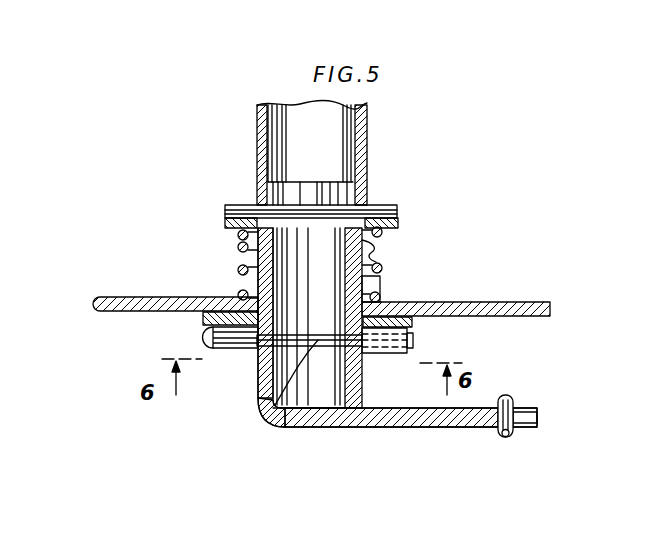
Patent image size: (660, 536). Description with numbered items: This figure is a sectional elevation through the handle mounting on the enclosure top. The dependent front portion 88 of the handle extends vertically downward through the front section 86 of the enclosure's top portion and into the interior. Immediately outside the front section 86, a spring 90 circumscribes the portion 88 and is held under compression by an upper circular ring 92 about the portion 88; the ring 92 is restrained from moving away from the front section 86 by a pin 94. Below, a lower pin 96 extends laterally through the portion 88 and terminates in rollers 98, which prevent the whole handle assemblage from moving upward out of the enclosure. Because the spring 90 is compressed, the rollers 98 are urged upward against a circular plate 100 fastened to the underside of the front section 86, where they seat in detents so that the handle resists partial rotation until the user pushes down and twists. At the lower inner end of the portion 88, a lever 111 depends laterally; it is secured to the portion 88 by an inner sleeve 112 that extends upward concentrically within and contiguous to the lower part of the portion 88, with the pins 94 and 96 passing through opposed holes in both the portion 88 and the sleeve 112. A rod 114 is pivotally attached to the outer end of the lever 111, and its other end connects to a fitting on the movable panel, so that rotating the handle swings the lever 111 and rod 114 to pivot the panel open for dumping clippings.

The front section 86 is at (155, 297).
The dependent front portion 88 is at (257, 143).
The spring 90 is at (238, 271).
The upper circular ring 92 is at (225, 228).
The pin 94 is at (318, 205).
The lower pin 96 is at (258, 420).
The rollers 98 is at (233, 348).
The circular plate 100 is at (413, 318).
The lever 111 is at (415, 408).
The inner sleeve 112 is at (365, 280).
The rod 114 is at (510, 395).